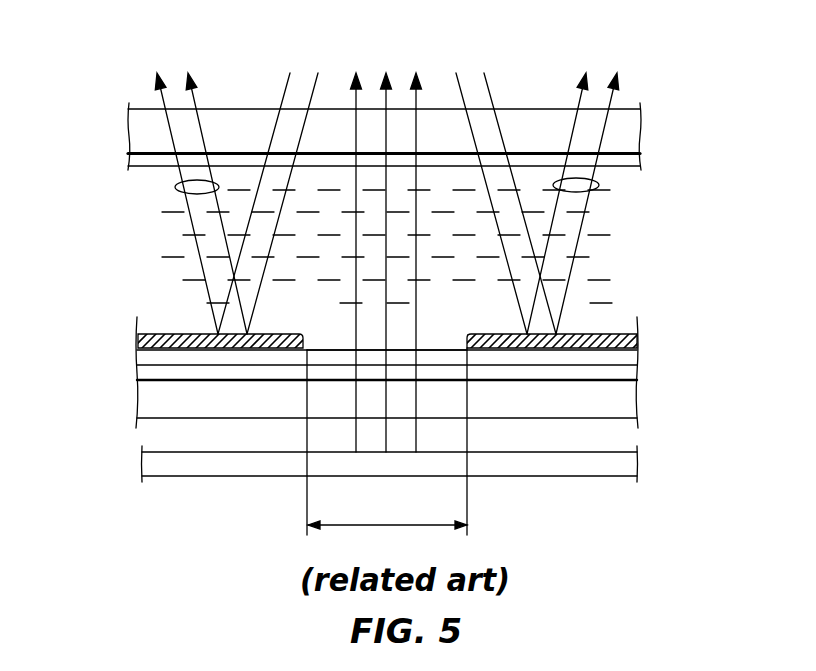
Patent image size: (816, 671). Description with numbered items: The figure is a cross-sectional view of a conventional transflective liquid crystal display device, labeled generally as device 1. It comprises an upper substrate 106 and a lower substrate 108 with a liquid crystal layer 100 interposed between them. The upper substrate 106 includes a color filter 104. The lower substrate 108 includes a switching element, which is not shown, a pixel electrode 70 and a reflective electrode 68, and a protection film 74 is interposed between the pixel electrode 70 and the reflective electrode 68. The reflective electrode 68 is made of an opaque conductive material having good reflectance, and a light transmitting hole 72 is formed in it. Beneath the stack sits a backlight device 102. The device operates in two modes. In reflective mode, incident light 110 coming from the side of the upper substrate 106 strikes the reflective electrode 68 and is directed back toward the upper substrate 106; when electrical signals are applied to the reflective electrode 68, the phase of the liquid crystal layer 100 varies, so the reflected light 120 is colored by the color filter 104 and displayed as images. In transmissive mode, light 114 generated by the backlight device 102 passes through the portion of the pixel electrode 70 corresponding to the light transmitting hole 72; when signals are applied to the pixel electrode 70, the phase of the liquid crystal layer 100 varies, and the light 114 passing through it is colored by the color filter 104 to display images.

The display device 1 is at (452, 410).
The reflective electrode 68 is at (138, 341).
The pixel electrode 70 is at (138, 376).
The light transmitting hole 72 is at (387, 441).
The protection film 74 is at (367, 357).
The liquid crystal layer 100 is at (657, 182).
The backlight device 102 is at (542, 462).
The color filter 104 is at (445, 157).
The upper substrate 106 is at (657, 98).
The lower substrate 108 is at (657, 323).
The incident light 110 is at (317, 90).
The light from the backlight device 114 is at (418, 210).
The reflected light 120 is at (176, 188).